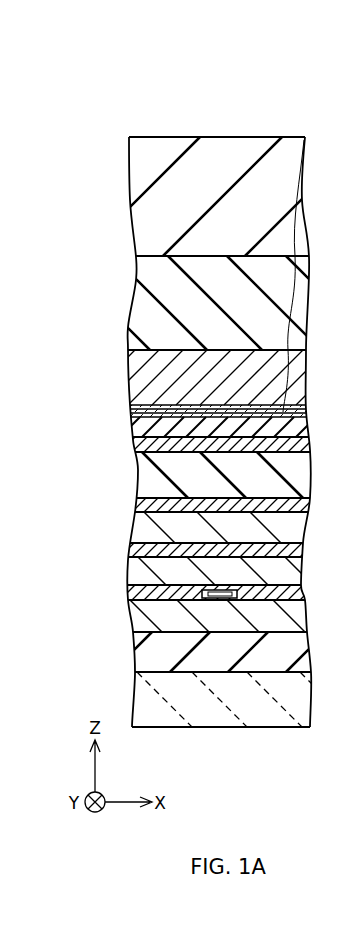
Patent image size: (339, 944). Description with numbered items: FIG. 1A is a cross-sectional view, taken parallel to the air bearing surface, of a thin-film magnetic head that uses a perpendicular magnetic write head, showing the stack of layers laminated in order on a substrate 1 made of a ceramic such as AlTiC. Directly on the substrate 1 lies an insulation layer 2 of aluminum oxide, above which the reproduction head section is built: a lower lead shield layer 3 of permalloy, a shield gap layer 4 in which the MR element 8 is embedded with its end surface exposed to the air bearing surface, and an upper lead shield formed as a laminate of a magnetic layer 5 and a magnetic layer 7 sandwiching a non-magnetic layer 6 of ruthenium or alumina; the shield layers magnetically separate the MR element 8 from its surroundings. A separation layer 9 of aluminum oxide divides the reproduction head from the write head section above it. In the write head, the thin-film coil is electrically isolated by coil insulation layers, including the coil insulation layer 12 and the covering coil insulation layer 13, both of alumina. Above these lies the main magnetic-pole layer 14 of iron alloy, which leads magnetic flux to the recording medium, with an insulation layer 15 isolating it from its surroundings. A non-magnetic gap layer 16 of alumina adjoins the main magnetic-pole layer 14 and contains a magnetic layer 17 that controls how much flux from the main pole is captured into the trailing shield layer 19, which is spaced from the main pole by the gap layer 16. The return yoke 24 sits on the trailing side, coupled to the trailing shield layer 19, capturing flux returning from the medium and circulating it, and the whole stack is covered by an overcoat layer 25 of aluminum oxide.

The substrate 1 is at (297, 718).
The insulation layer 2 is at (275, 653).
The lower lead shield layer 3 is at (252, 622).
The shield gap layer 4 is at (197, 603).
The magnetic layer 5 is at (182, 575).
The non-magnetic layer 6 is at (161, 550).
The magnetic layer 7 is at (143, 530).
The MR element 8 is at (225, 596).
The separation layer 9 is at (138, 503).
The coil insulation layer 12 is at (142, 472).
The coil insulation layer 13 is at (138, 443).
The main magnetic-pole layer 14 is at (222, 435).
The insulation layer 15 is at (263, 428).
The non-magnetic gap layer 16 is at (300, 412).
The magnetic layer 17 is at (160, 405).
The trailing shield layer 19 is at (185, 358).
The return yoke 24 is at (207, 273).
The overcoat layer 25 is at (220, 147).